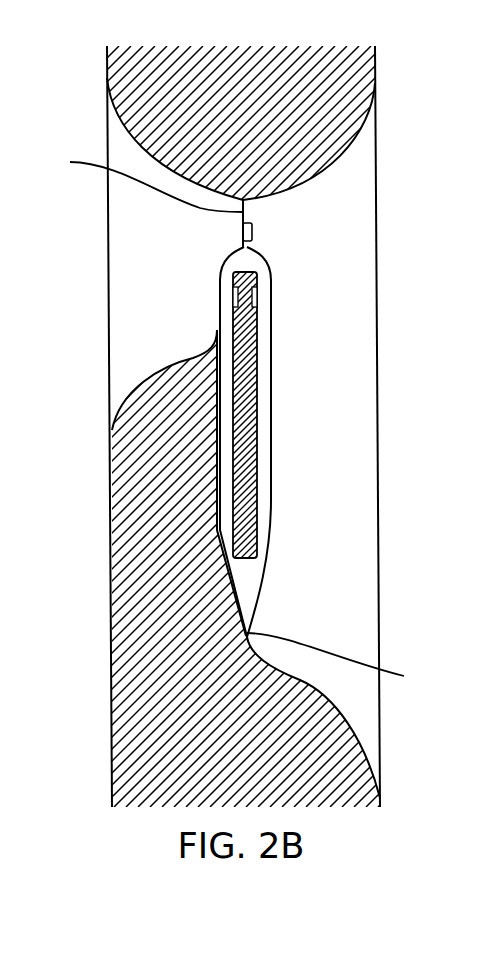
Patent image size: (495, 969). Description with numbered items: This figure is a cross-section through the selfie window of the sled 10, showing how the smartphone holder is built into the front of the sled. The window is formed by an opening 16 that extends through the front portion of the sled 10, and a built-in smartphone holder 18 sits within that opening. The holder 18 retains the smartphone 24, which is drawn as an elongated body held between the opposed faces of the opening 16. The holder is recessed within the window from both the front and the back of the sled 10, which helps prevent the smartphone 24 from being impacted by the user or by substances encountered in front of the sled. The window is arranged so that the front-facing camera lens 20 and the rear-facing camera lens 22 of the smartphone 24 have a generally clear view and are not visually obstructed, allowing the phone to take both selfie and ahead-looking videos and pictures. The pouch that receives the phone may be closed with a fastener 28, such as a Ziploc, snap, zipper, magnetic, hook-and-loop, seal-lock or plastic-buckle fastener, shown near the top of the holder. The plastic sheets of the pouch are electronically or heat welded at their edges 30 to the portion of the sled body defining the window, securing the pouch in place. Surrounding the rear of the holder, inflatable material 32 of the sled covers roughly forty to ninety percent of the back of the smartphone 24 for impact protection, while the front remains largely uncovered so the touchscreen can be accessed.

The sled 10 is at (350, 95).
The opening 16 is at (148, 230).
The smartphone holder 18 is at (271, 345).
The front-facing camera lens 20 is at (257, 296).
The rear-facing camera lens 22 is at (234, 297).
The smartphone 24 is at (247, 448).
The fastener 28 is at (252, 233).
The edges 30 is at (238, 420).
The inflatable material 32 is at (148, 505).